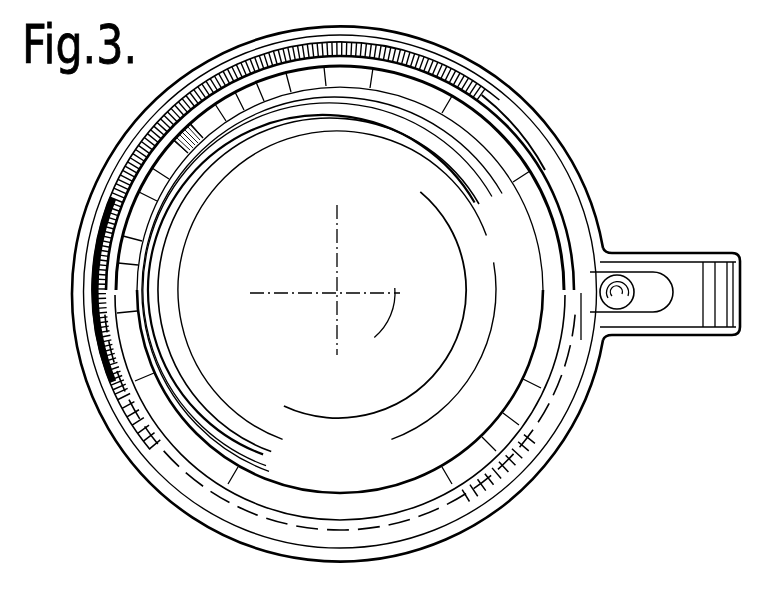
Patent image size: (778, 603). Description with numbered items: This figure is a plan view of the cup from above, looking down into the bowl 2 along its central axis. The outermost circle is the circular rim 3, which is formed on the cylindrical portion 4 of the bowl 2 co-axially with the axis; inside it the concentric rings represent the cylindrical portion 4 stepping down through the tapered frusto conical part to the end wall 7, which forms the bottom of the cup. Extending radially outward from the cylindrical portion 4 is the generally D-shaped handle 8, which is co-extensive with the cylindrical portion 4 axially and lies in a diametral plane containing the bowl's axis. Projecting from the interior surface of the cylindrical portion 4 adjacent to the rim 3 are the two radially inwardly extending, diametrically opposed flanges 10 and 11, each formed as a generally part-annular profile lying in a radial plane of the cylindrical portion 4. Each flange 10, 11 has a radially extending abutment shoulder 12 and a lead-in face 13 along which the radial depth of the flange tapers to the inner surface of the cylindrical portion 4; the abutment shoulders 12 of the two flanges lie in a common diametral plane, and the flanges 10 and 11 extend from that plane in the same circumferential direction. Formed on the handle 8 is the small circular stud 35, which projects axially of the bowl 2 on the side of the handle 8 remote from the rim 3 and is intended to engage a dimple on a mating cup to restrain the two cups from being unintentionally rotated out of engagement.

The bowl 2 is at (514, 90).
The circular rim 3 is at (162, 483).
The cylindrical portion 4 is at (516, 490).
The end wall 7 is at (319, 339).
The D-shaped handle 8 is at (738, 322).
The flange 10 is at (112, 240).
The flange 11 is at (585, 340).
The abutment shoulder 12 is at (100, 295).
The lead-in face 13 is at (108, 195).
The circular stud 35 is at (620, 302).